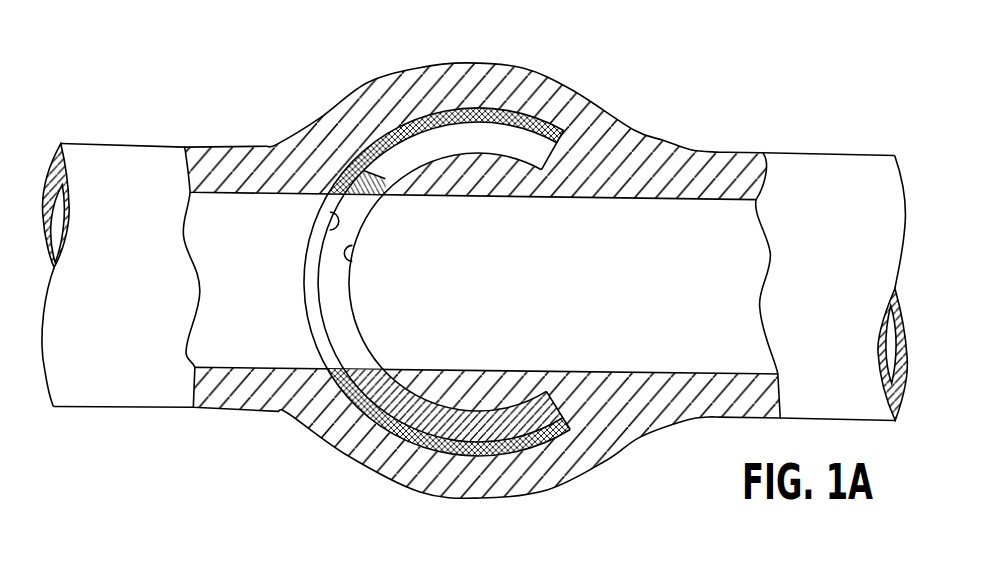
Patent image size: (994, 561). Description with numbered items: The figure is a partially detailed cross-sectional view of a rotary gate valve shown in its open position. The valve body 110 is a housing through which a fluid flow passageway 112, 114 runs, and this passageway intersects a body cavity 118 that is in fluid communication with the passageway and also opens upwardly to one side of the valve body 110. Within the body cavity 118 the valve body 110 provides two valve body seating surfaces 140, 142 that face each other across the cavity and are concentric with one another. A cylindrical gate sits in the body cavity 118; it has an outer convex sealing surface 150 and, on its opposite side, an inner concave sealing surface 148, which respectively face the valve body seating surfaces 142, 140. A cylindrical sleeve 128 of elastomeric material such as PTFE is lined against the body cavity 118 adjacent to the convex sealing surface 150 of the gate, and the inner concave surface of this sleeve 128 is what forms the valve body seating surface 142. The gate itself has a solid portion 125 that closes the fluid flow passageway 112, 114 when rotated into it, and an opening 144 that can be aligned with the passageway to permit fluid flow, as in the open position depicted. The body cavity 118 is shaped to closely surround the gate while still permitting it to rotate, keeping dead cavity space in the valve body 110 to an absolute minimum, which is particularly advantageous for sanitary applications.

The valve body 110 is at (668, 136).
The fluid flow passageway 112 is at (750, 297).
The fluid flow passageway 114 is at (218, 291).
The body cavity 118 is at (391, 243).
The solid portion 125 is at (508, 427).
The cylindrical sleeve 128 is at (311, 282).
The valve body seating surface 140 is at (348, 263).
The valve body seating surface 142 is at (336, 235).
The opening 144 is at (340, 302).
The inner concave sealing surface 148 is at (372, 345).
The outer convex sealing surface 150 is at (333, 338).